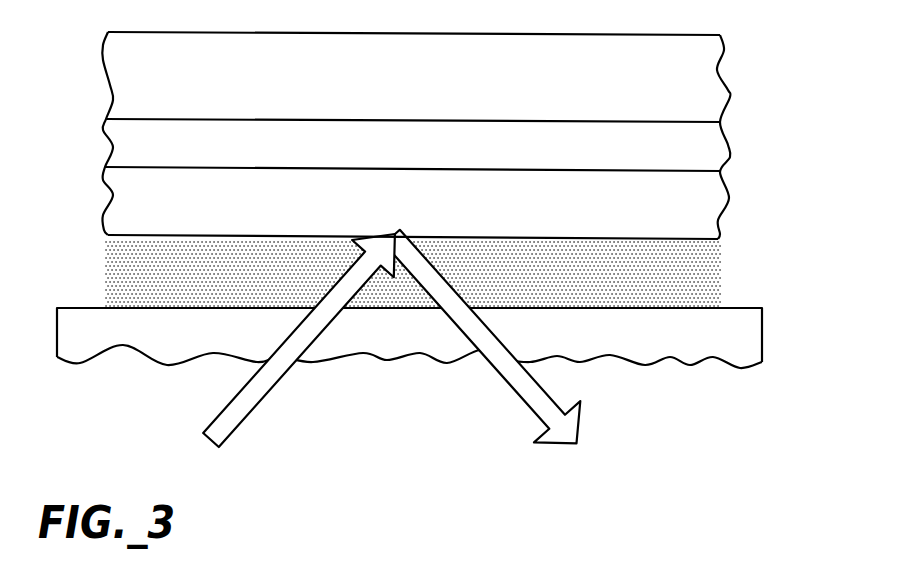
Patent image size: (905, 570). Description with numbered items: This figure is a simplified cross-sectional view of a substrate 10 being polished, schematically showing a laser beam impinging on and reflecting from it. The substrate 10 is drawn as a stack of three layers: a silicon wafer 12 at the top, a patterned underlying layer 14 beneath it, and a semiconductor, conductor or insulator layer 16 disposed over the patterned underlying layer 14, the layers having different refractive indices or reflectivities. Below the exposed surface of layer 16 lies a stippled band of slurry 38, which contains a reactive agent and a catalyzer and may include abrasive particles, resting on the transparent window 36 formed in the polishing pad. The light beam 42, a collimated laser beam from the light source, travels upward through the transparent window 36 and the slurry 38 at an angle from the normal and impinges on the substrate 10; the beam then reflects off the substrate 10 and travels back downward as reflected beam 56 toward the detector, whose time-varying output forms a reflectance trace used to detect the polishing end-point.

The substrate 10 is at (469, 129).
The silicon wafer 12 is at (730, 96).
The patterned underlying layer 14 is at (730, 158).
The layer 16 is at (728, 200).
The transparent window 36 is at (752, 340).
The slurry 38 is at (700, 284).
The light beam 42 is at (235, 413).
The reflected light beam 56 is at (523, 391).